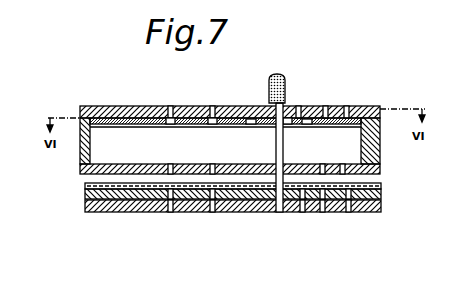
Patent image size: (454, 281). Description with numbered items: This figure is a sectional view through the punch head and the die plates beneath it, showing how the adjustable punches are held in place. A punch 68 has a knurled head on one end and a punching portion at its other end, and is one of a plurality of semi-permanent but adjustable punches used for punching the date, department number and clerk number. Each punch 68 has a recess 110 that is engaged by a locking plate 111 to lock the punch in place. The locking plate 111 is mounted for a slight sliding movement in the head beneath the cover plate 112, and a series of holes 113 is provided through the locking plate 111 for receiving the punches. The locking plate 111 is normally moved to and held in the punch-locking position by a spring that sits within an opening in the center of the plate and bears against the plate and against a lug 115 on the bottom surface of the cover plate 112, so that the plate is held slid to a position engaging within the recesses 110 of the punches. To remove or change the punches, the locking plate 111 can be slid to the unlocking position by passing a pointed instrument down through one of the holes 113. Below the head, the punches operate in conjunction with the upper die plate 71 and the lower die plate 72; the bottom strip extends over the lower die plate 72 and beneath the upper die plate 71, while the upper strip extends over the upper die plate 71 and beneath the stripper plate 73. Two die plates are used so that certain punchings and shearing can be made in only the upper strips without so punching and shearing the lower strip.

The punch 68 is at (286, 98).
The recess 110 is at (287, 122).
The locking plate 111 is at (157, 122).
The cover plate 112 is at (157, 108).
The holes 113 is at (168, 121).
The lug 115 is at (213, 121).
The upper die plate 71 is at (85, 195).
The lower die plate 72 is at (85, 207).
The stripper plate 73 is at (85, 186).